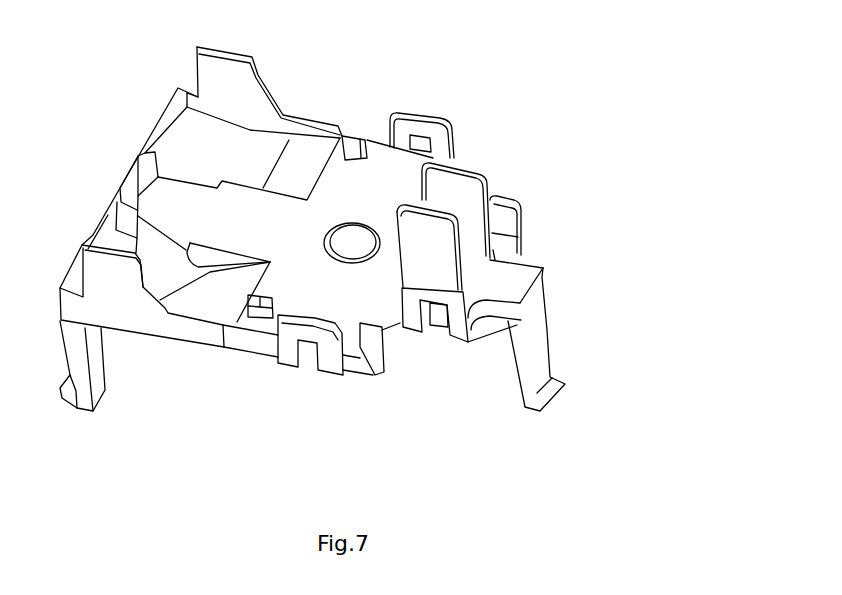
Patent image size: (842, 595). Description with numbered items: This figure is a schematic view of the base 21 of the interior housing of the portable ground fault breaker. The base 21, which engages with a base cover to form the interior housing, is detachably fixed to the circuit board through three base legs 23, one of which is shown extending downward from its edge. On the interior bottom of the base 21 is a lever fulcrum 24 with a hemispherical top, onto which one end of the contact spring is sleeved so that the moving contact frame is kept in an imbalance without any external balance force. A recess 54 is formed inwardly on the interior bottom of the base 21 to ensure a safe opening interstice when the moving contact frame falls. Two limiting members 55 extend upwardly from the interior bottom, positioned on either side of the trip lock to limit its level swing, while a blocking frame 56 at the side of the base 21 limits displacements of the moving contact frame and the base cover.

The base 21 is at (300, 293).
The base leg 23 is at (537, 328).
The lever fulcrum 24 is at (348, 243).
The recess 54 is at (187, 287).
The limiting member 55 is at (477, 197).
The blocking frame 56 is at (227, 97).